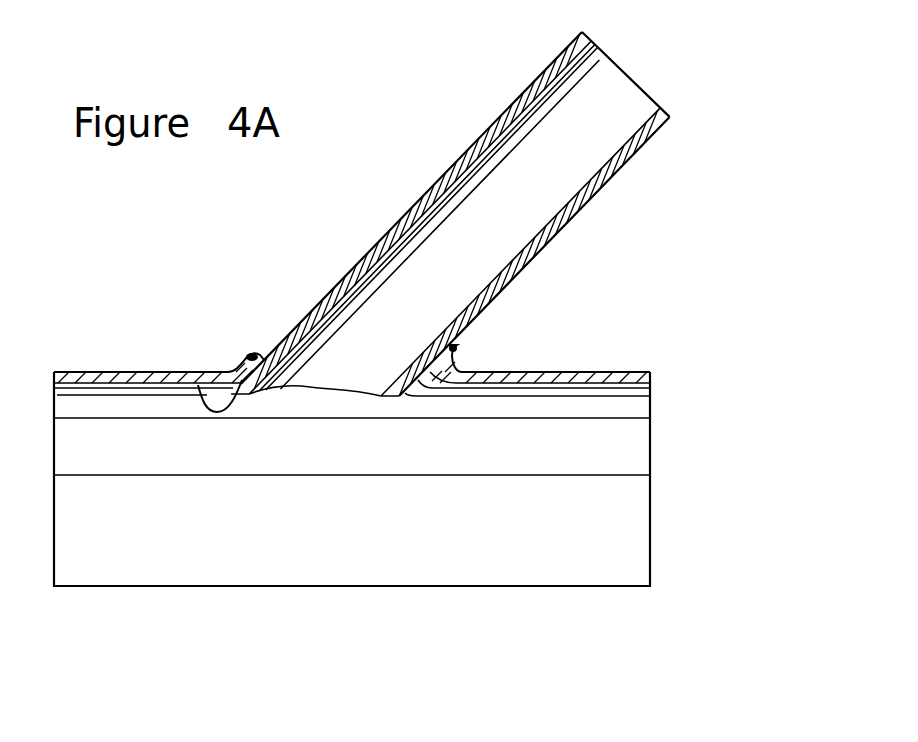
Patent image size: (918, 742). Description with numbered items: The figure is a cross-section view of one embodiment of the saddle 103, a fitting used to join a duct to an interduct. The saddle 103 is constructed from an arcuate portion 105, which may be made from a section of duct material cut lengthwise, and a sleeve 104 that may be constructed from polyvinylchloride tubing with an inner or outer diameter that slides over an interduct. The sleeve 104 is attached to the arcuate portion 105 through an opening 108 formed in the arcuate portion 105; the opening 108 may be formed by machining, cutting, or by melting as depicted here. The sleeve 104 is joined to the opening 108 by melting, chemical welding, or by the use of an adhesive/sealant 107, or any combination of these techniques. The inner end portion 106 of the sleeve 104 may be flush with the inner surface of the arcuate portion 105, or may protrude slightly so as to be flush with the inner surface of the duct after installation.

The saddle 103 is at (410, 679).
The sleeve 104 is at (613, 177).
The arcuate portion 105 is at (653, 430).
The inner end portion 106 is at (198, 385).
The adhesive/sealant 107 is at (252, 355).
The opening 108 is at (463, 360).